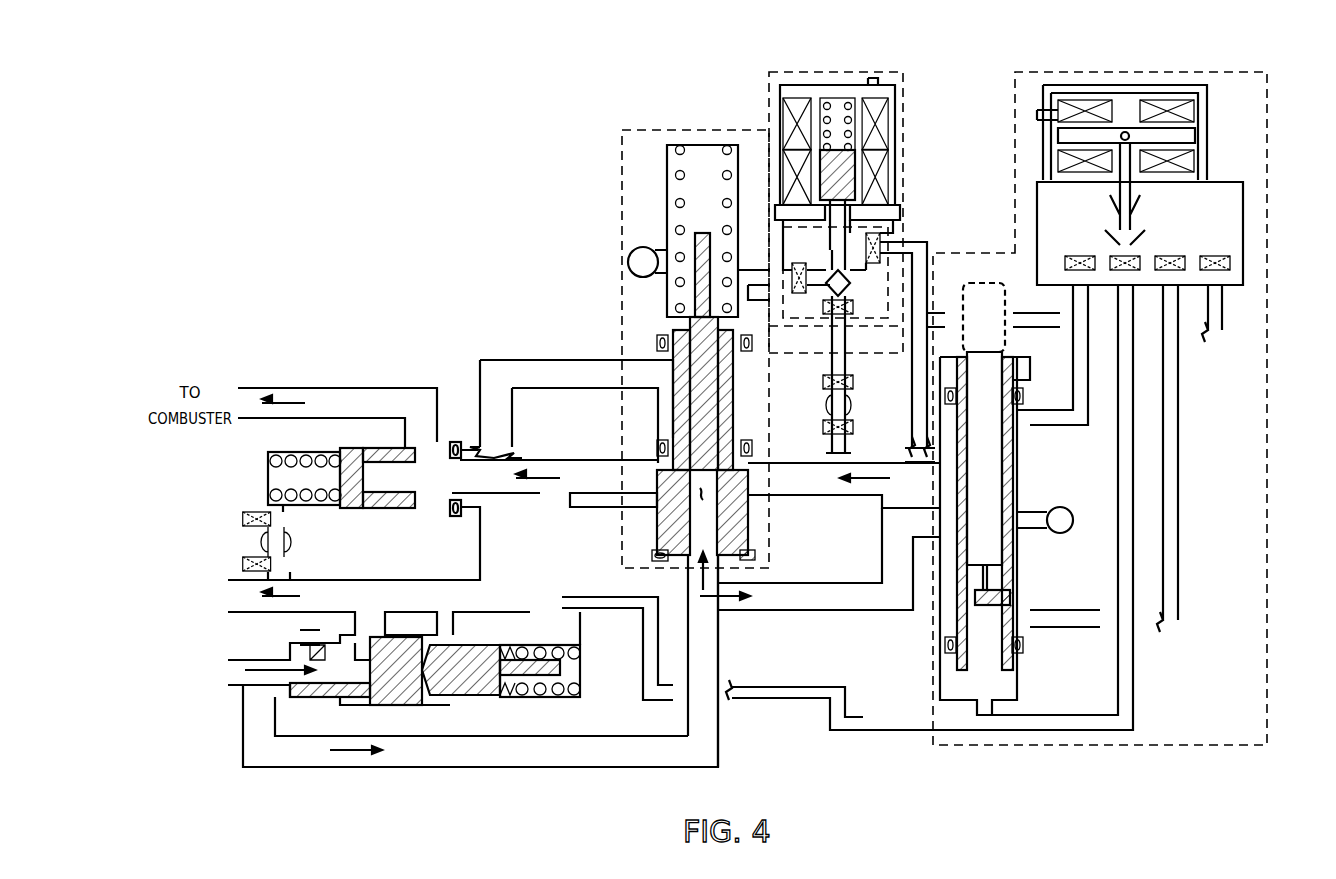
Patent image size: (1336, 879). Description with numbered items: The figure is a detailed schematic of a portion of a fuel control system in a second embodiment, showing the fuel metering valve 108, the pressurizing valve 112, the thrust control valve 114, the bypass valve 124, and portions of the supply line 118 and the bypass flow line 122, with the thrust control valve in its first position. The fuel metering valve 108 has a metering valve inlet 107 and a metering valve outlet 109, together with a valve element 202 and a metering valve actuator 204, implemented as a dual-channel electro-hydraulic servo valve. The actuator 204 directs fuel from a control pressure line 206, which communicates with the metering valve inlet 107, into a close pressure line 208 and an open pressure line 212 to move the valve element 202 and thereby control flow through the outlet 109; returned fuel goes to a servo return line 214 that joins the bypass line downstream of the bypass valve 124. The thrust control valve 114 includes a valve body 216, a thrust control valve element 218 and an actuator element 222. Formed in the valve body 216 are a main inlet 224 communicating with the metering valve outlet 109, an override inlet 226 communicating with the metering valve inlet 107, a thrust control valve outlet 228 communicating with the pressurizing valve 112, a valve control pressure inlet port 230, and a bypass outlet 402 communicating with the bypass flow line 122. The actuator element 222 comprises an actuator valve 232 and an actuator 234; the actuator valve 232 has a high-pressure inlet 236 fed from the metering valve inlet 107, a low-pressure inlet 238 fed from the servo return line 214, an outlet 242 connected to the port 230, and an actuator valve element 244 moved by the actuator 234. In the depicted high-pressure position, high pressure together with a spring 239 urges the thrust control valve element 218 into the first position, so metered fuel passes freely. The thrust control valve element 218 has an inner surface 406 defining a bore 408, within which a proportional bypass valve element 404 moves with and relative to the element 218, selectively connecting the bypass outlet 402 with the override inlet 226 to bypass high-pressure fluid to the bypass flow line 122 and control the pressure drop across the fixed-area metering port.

The metering valve inlet 107 is at (930, 528).
The fuel metering valve 108 is at (1276, 364).
The metering valve outlet 109 is at (930, 471).
The pressurizing valve 112 is at (371, 448).
The thrust control valve 114 is at (604, 166).
The supply line 118 is at (334, 390).
The bypass flow line 122 is at (405, 580).
The bypass valve 124 is at (400, 714).
The valve element 202 is at (1028, 458).
The metering valve actuator 204 is at (1218, 140).
The control pressure line 206 is at (1202, 336).
The close pressure line 208 is at (1072, 373).
The open pressure line 212 is at (1175, 436).
The servo return line 214 is at (1128, 581).
The valve body 216 is at (608, 427).
The thrust control valve element 218 is at (735, 406).
The actuator element 222 is at (906, 111).
The main inlet 224 is at (747, 480).
The override inlet 226 is at (752, 560).
The thrust control valve outlet 228 is at (614, 466).
The valve control pressure inlet port 230 is at (759, 205).
The actuator valve 232 is at (882, 234).
The actuator 234 is at (890, 140).
The high-pressure inlet 236 is at (928, 246).
The low-pressure inlet 238 is at (832, 360).
The spring 239 is at (675, 175).
The outlet 242 is at (782, 292).
The actuator valve element 244 is at (832, 295).
The bypass outlet 402 is at (618, 366).
The proportional bypass valve element 404 is at (698, 326).
The inner surface 406 is at (749, 456).
The bore 408 is at (701, 627).